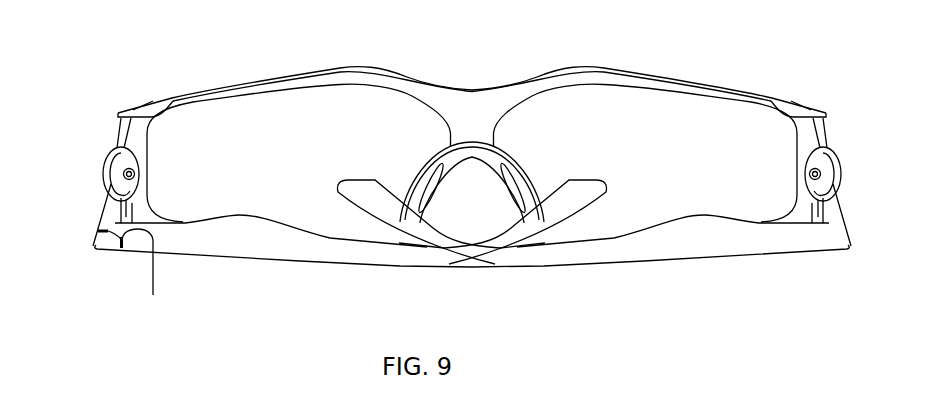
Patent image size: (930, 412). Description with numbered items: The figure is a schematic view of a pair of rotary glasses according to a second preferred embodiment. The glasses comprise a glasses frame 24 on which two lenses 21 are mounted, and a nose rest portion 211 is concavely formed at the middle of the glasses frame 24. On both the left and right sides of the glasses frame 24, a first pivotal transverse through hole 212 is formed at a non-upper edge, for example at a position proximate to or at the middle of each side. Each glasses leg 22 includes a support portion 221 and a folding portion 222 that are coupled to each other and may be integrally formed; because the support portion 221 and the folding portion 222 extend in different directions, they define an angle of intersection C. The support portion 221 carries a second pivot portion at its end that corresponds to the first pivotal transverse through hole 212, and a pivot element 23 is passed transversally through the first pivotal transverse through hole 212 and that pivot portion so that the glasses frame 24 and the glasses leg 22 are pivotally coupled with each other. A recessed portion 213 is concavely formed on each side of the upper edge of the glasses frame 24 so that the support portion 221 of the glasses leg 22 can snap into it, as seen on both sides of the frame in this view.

The lens 21 is at (195, 132).
The nose rest portion 211 is at (485, 152).
The first pivotal transverse through hole 212 is at (126, 173).
The recessed portion 213 is at (154, 105).
The glasses leg 22 is at (460, 256).
The support portion 221 is at (107, 203).
The folding portion 222 is at (233, 242).
The pivot element 23 is at (122, 148).
The glasses frame 24 is at (245, 90).
The angle of intersection C is at (131, 280).